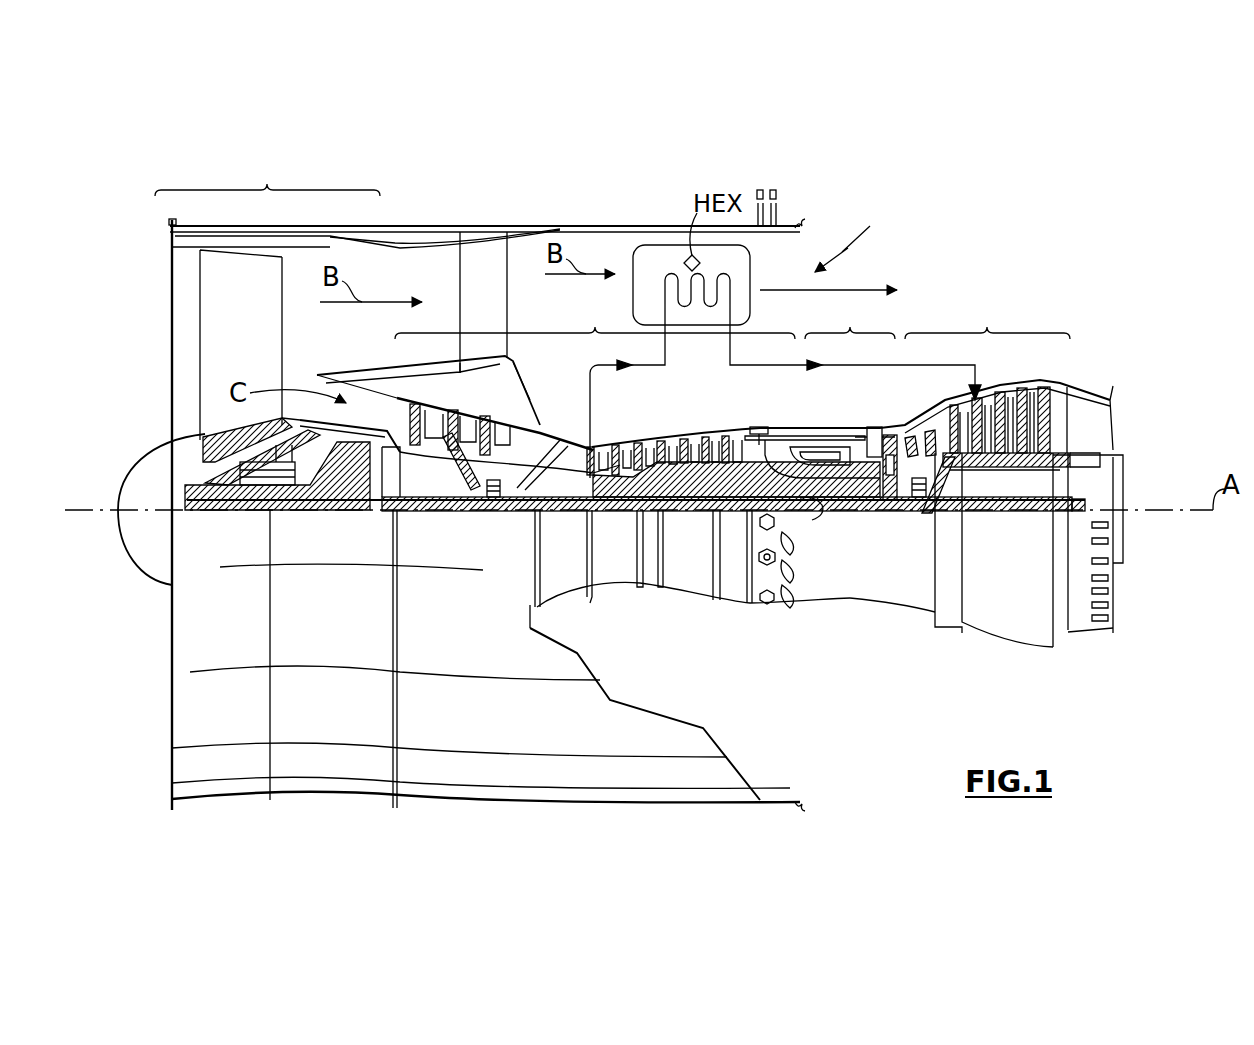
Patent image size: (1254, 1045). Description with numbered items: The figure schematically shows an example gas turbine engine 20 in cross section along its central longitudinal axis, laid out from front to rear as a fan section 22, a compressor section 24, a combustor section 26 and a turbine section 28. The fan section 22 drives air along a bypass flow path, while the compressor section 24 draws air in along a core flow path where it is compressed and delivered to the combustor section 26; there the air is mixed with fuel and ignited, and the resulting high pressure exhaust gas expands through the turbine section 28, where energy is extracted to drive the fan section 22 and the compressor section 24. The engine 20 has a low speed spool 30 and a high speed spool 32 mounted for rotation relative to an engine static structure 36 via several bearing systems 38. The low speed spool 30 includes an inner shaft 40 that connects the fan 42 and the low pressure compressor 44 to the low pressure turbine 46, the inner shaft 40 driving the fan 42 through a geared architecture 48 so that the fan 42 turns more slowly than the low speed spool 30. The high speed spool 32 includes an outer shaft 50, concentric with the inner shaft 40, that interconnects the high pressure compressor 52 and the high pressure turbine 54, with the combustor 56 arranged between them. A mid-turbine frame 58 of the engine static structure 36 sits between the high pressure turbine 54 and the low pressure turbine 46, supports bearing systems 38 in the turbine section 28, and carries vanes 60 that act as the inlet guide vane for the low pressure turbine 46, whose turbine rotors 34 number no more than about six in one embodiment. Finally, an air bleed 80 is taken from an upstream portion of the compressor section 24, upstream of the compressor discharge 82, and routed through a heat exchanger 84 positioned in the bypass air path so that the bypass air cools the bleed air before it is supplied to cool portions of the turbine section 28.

The gas turbine engine 20 is at (861, 236).
The fan section 22 is at (267, 176).
The compressor section 24 is at (595, 319).
The combustor section 26 is at (850, 319).
The turbine section 28 is at (987, 319).
The low speed spool 30 is at (690, 518).
The high speed spool 32 is at (723, 467).
The turbine rotors 34 is at (1012, 470).
The engine static structure 36 is at (733, 603).
The bearing systems 38 is at (489, 498).
The inner shaft 40 is at (557, 512).
The fan 42 is at (254, 354).
The low pressure compressor section 44 is at (468, 412).
The low pressure turbine section 46 is at (998, 393).
The geared architecture 48 is at (360, 492).
The outer shaft 50 is at (812, 498).
The high pressure compressor section 52 is at (663, 478).
The high pressure turbine section 54 is at (875, 427).
The combustor 56 is at (806, 452).
The mid-turbine frame 58 is at (917, 418).
The vanes 60 is at (943, 458).
The air bleed 80 is at (590, 420).
The discharge 82 is at (762, 427).
The heat exchanger 84 is at (658, 248).